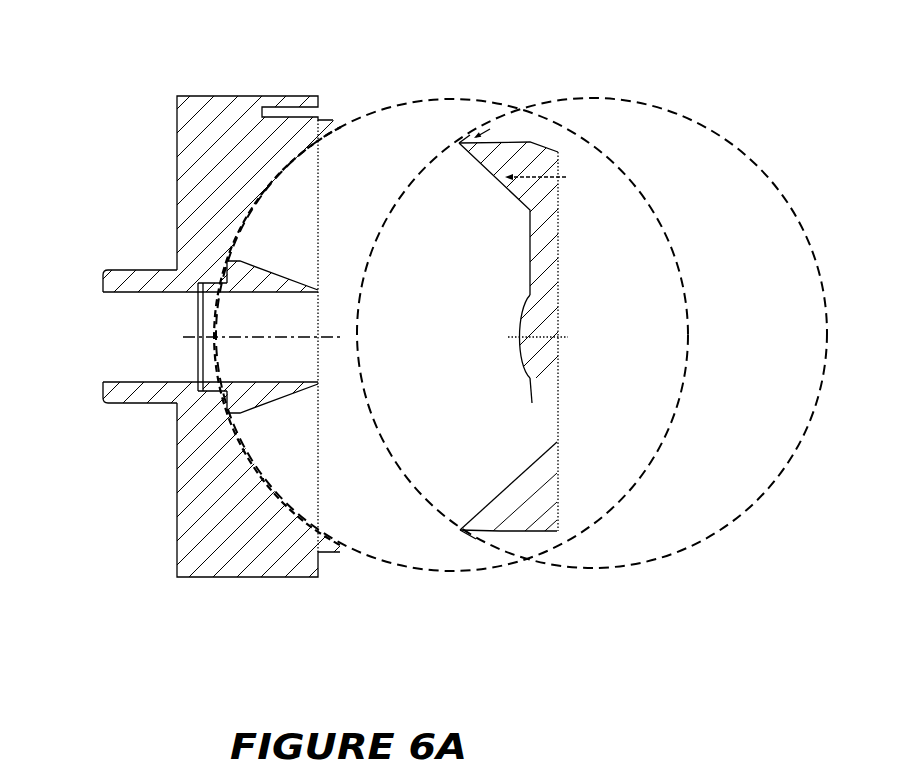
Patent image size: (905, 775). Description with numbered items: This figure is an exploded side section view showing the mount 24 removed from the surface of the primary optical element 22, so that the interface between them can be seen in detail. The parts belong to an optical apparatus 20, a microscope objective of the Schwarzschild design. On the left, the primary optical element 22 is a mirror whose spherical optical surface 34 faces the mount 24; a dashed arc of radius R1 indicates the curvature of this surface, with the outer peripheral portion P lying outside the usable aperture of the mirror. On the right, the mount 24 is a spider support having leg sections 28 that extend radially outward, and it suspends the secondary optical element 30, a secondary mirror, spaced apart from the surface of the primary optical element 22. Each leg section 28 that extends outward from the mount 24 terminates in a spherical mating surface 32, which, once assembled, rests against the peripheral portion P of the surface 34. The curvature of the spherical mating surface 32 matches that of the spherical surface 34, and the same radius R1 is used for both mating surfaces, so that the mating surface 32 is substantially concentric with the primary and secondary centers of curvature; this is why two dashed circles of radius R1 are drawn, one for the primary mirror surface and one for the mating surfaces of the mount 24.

The optical apparatus 20 is at (86, 136).
The primary optical element 22 is at (177, 476).
The mount 24 is at (558, 488).
The leg section 28 is at (481, 139).
The secondary optical element 30 is at (522, 318).
The spherical mating surface 32 is at (467, 137).
The spherical optical surface 34 is at (276, 492).
The peripheral portion P is at (335, 128).
The radius R1 is at (657, 222).